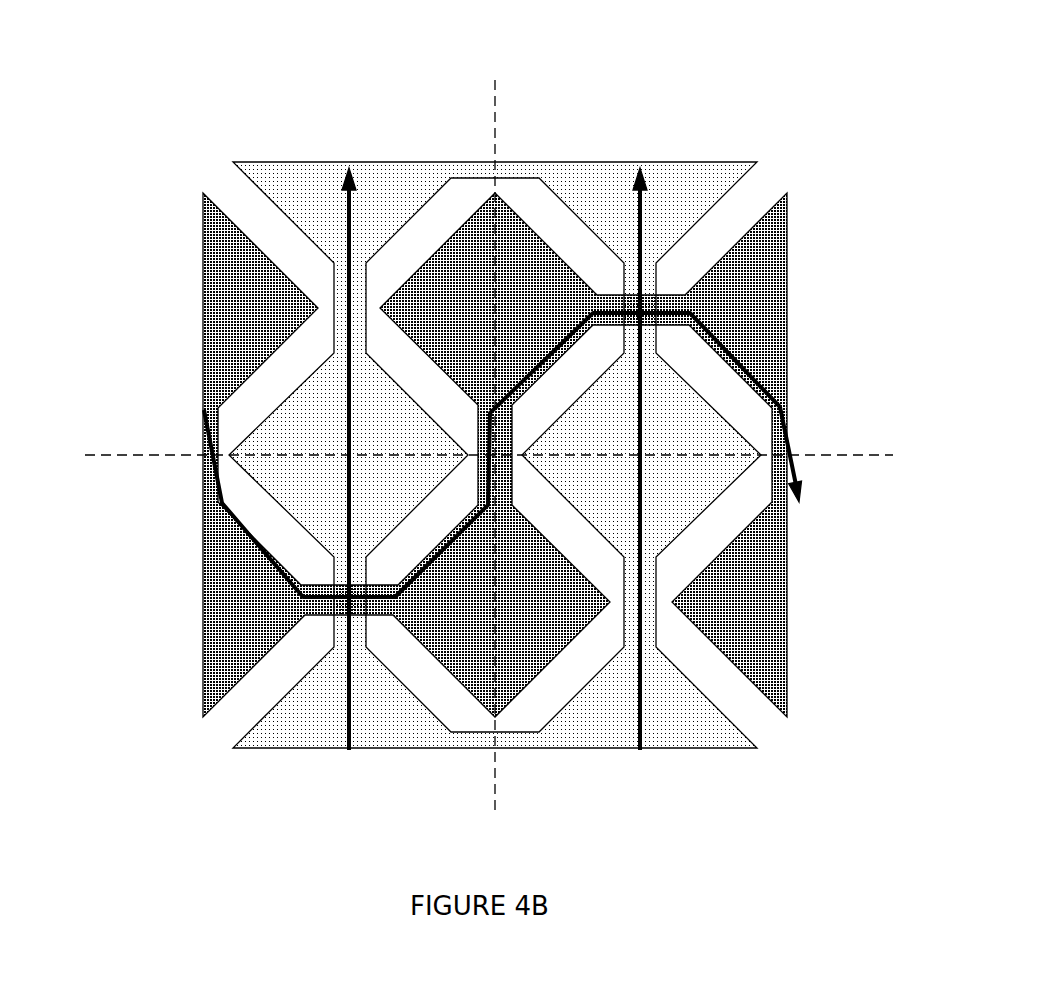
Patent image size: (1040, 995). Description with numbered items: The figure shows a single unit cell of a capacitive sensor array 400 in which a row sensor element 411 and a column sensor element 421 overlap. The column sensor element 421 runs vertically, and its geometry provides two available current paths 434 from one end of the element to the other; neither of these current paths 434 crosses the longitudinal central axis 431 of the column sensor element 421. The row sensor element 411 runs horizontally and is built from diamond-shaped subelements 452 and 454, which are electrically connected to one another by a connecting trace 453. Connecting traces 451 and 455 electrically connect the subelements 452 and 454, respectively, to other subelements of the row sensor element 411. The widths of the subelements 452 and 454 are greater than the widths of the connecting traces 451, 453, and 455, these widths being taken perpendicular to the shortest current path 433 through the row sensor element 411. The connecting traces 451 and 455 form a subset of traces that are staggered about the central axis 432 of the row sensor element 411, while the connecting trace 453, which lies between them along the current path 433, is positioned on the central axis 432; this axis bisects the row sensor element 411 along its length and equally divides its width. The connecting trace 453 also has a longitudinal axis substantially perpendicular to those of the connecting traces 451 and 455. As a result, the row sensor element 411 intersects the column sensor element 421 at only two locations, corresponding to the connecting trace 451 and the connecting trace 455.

The capacitive sensor array 400 is at (800, 76).
The row sensor element 411 is at (491, 455).
The column sensor element 421 is at (495, 434).
The longitudinal central axis 431 is at (500, 76).
The central axis 432 is at (884, 447).
The current path 433 is at (190, 433).
The current paths 434 is at (357, 710).
The connecting trace 451 is at (296, 602).
The diamond-shaped subelement 452 is at (495, 611).
The connecting trace 453 is at (516, 467).
The diamond-shaped subelement 454 is at (495, 299).
The connecting trace 455 is at (690, 296).